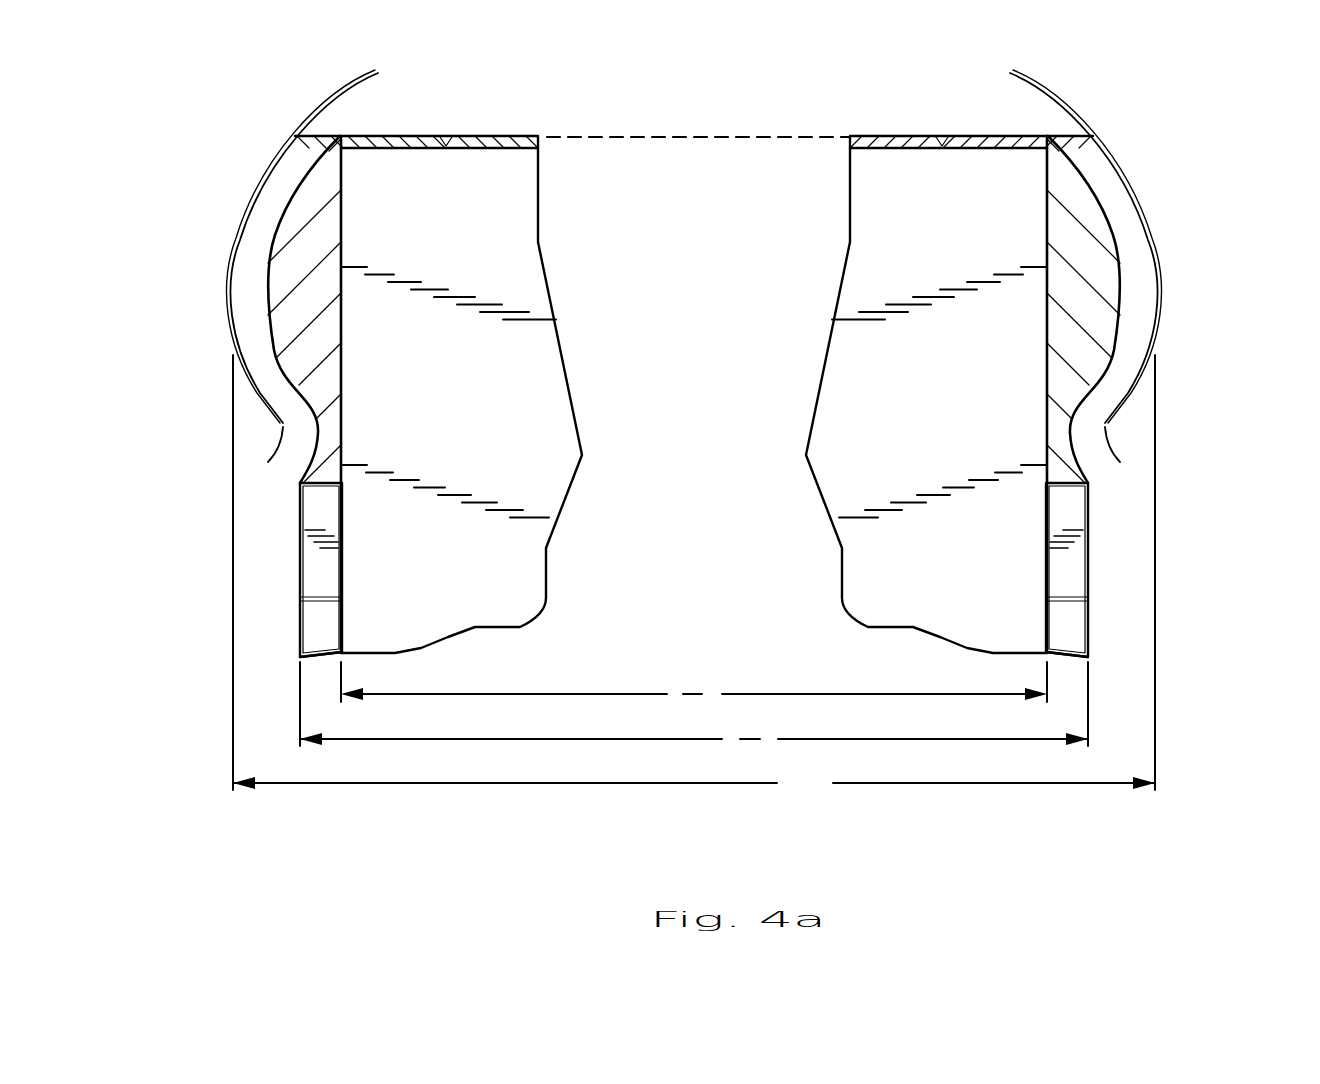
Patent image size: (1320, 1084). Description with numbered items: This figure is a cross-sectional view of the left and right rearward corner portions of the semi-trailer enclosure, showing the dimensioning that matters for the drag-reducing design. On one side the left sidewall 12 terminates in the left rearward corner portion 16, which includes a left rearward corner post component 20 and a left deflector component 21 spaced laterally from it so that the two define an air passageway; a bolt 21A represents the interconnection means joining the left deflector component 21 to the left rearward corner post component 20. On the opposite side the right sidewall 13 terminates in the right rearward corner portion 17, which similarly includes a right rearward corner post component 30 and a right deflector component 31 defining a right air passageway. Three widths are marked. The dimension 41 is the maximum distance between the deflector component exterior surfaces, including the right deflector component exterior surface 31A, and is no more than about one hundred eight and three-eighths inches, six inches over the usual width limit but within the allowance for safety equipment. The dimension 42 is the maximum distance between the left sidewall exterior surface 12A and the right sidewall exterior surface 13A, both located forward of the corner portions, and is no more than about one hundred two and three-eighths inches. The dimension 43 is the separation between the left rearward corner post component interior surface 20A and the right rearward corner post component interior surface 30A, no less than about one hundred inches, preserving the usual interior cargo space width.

The left sidewall 12 is at (1125, 570).
The left sidewall exterior surface 12A is at (1141, 643).
The right sidewall 13 is at (300, 593).
The right sidewall exterior surface 13A is at (280, 640).
The left rearward corner portion 16 is at (1039, 363).
The right rearward corner portion 17 is at (350, 363).
The left rearward corner post component 20 is at (1107, 309).
The left rearward corner post component interior surface 20A is at (982, 375).
The left deflector component 21 is at (1108, 267).
The bolt 21A is at (1127, 246).
The right rearward corner post component 30 is at (322, 183).
The right rearward corner post component interior surface 30A is at (362, 186).
The right deflector component 31 is at (248, 214).
The right deflector component exterior surface 31A is at (215, 297).
The dimension 41 is at (797, 783).
The dimension 42 is at (750, 739).
The dimension 43 is at (693, 694).